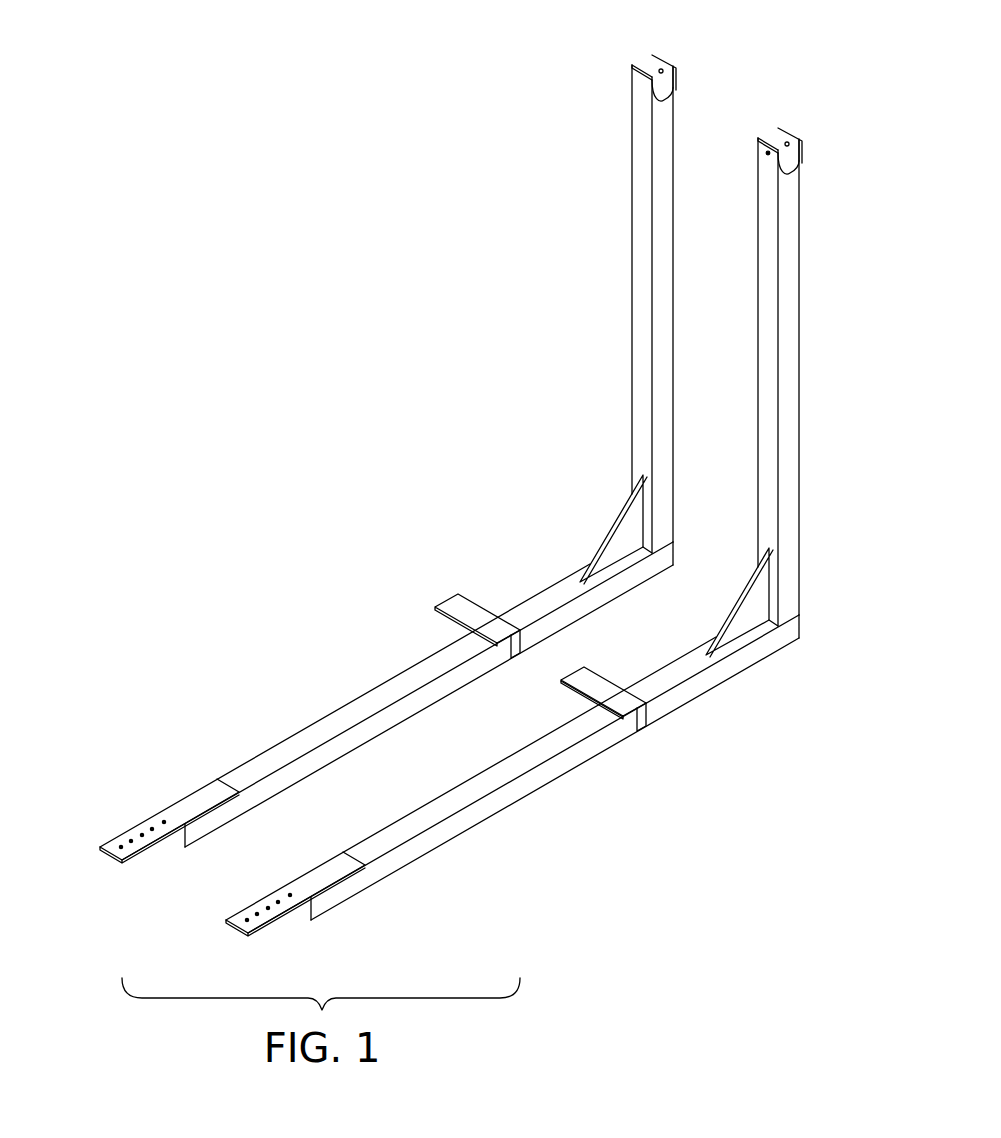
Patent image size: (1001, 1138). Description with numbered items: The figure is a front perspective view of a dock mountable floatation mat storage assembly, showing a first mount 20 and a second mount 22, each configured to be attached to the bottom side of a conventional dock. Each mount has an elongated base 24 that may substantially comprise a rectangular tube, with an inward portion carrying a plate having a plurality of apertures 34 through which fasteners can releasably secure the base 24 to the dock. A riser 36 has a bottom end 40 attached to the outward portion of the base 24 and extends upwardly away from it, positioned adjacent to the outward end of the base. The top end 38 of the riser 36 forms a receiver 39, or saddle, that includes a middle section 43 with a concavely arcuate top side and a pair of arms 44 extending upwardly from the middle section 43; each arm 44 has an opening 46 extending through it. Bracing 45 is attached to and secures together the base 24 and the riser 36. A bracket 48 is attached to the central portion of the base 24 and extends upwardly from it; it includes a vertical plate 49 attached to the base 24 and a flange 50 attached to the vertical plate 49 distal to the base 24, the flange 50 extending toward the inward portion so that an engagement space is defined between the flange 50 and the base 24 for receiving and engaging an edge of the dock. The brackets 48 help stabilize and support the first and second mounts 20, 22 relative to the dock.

The first mount 20 is at (510, 445).
The second mount 22 is at (834, 663).
The base 24 is at (448, 776).
The aperture 34 is at (132, 838).
The riser 36 is at (620, 253).
The top end 38 is at (677, 57).
The receiver 39 is at (635, 50).
The bottom end 40 is at (652, 544).
The middle section 43 is at (795, 176).
The arms 44 is at (801, 152).
The bracing 45 is at (622, 535).
The opening 46 is at (783, 140).
The bracket 48 is at (456, 598).
The vertical plate 49 is at (638, 728).
The flange 50 is at (590, 699).